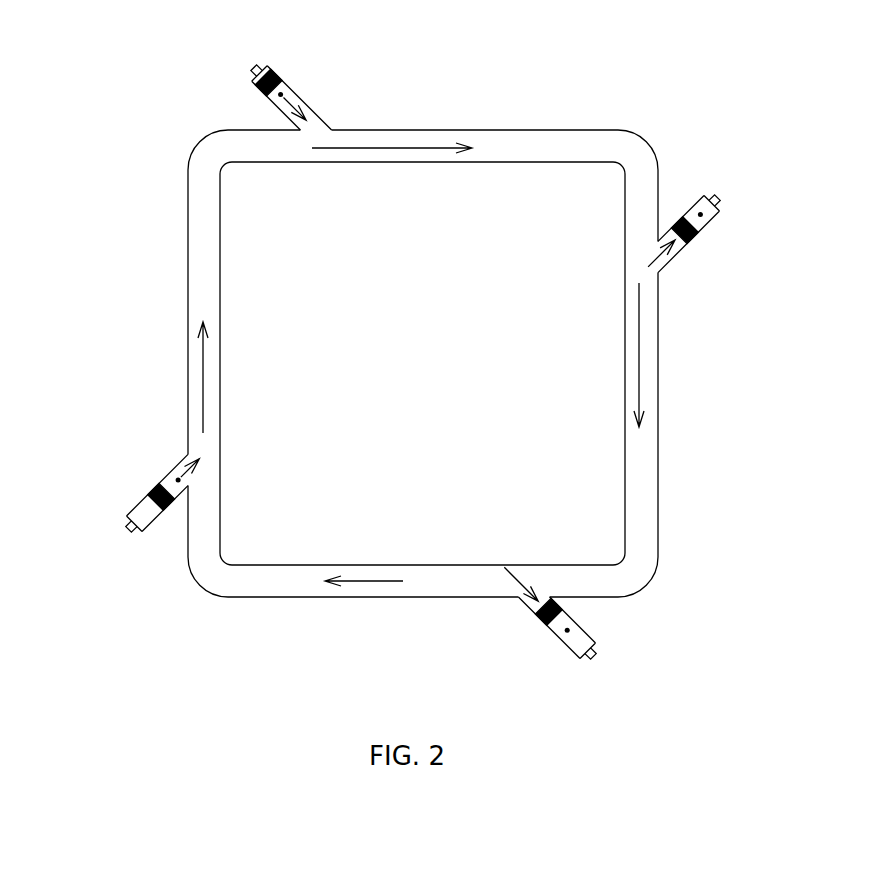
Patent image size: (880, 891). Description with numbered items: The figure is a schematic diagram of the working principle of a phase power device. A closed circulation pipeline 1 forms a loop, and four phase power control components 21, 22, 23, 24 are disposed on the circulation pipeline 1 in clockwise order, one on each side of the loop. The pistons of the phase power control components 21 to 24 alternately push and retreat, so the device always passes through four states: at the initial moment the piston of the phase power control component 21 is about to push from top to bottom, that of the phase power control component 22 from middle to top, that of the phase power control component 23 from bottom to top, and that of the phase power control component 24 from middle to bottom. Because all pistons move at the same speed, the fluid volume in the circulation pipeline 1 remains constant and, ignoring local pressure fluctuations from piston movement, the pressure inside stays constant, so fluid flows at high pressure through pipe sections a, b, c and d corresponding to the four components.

The circulation pipeline 1 is at (528, 148).
The phase power control component 21 is at (270, 63).
The phase power control component 22 is at (692, 200).
The phase power control component 23 is at (560, 637).
The phase power control component 24 is at (170, 467).